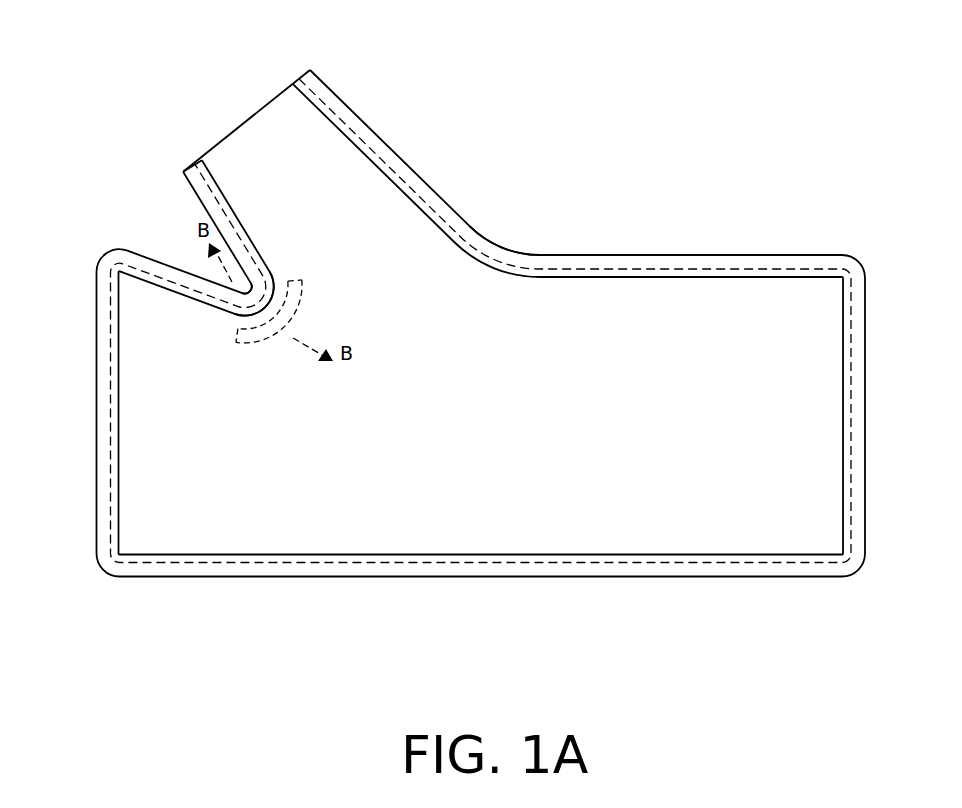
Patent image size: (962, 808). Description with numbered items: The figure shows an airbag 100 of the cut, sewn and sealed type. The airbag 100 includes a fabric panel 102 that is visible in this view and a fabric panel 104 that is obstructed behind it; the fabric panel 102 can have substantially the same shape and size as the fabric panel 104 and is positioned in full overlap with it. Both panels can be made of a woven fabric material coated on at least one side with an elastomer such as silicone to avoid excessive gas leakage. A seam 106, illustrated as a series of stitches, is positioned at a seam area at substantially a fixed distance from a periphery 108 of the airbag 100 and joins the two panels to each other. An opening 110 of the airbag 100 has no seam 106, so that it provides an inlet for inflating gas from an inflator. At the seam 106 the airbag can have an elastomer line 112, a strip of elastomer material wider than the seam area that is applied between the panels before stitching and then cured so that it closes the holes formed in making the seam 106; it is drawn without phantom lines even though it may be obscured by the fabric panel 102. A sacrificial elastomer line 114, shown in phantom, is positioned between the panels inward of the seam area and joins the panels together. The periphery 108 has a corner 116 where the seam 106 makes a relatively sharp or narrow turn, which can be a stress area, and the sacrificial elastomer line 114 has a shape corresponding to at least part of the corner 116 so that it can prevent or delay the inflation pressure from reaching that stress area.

The airbag 100 is at (486, 326).
The fabric panel 102 is at (568, 428).
The fabric panel 104 is at (540, 228).
The seam 106 is at (215, 187).
The periphery 108 is at (198, 197).
The opening 110 is at (243, 120).
The elastomer line 112 is at (247, 232).
The sacrificial elastomer line 114 is at (302, 312).
The corner 116 is at (222, 318).